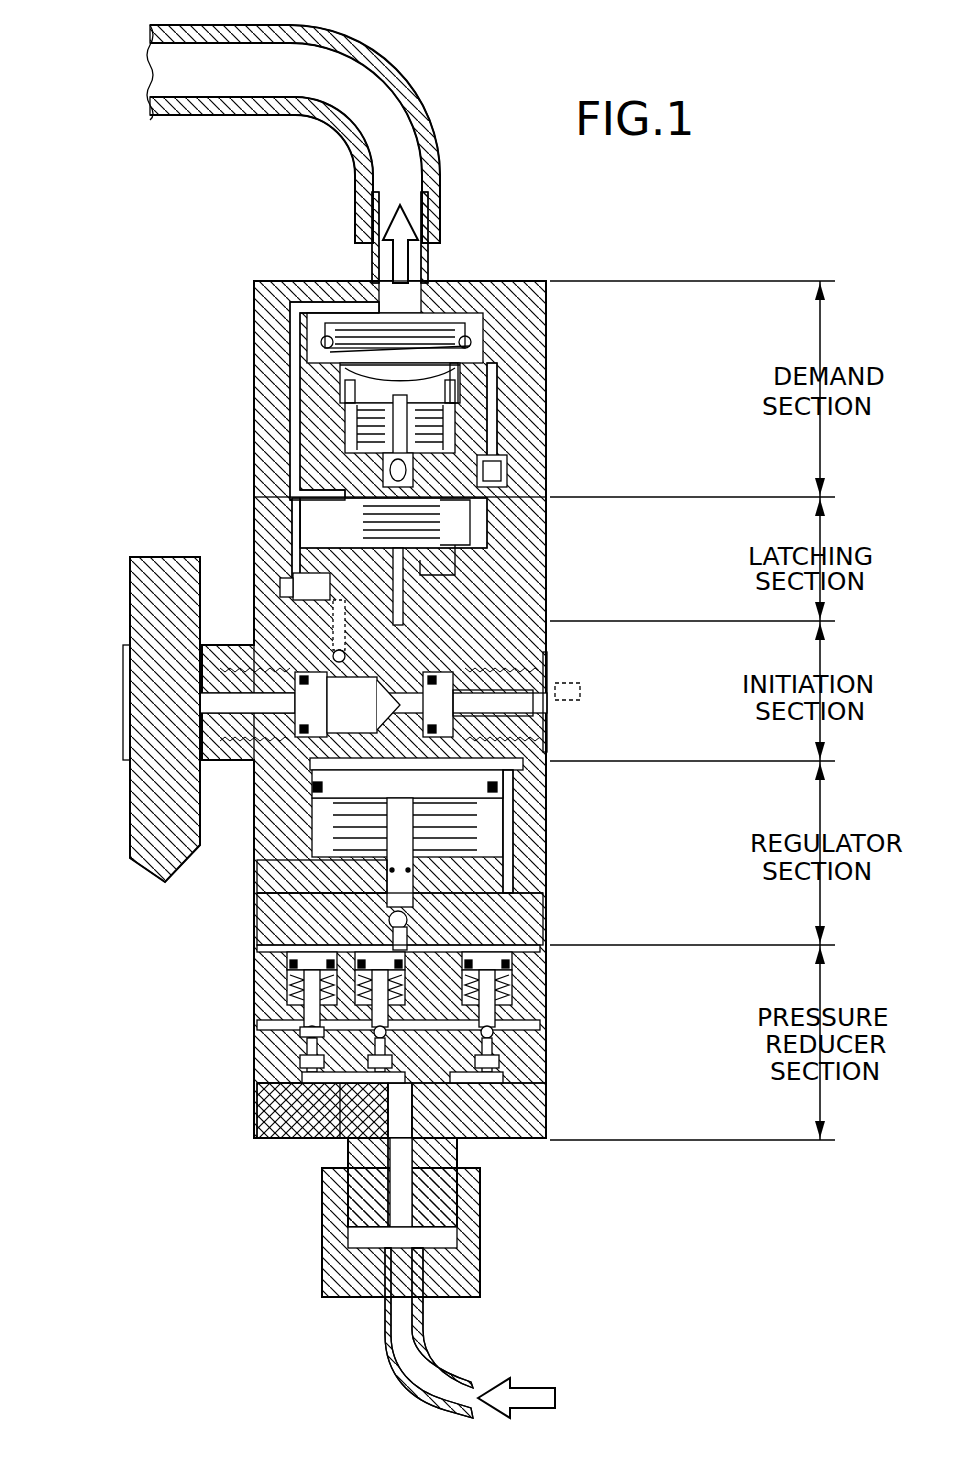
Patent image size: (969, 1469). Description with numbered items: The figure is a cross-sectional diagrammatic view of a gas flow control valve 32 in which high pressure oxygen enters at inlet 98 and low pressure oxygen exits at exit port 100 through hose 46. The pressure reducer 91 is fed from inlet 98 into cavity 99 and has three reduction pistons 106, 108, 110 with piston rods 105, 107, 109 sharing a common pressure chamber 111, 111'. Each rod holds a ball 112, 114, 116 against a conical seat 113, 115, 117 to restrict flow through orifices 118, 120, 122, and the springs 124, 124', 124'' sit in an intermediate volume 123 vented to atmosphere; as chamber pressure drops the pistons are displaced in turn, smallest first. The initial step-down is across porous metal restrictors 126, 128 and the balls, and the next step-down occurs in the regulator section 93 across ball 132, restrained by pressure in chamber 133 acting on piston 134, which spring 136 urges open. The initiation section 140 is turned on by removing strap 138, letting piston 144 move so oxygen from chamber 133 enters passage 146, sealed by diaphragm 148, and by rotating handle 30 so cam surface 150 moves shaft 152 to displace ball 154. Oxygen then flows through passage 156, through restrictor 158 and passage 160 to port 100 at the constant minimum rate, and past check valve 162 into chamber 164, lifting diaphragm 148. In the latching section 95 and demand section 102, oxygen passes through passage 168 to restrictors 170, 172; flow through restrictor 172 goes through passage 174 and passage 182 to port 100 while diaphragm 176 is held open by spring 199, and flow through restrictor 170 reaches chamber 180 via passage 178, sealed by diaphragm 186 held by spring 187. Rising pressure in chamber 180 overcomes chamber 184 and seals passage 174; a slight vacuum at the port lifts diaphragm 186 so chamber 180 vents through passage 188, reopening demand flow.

The breathing hose 46 is at (407, 82).
The exit port 100 is at (402, 190).
The spring 187 is at (432, 330).
The passage 188 is at (470, 340).
The diaphragm 186 is at (480, 355).
The spring 199 is at (500, 388).
The passage 178 is at (460, 420).
The flow restrictor 172 is at (470, 455).
The flow restrictor 170 is at (500, 470).
The chamber 180 is at (345, 372).
The diaphragm 176 is at (370, 380).
The passage 174 is at (345, 415).
The chamber 184 is at (345, 437).
The passage 160 is at (320, 447).
The passage 182 is at (300, 480).
The check valve 162 is at (300, 530).
The restrictor 158 is at (320, 575).
The passage 156 is at (288, 588).
The ball 154 is at (338, 620).
The shaft 152 is at (335, 655).
The diaphragm 148 is at (490, 516).
The passage 168 is at (470, 545).
The chamber 164 is at (470, 560).
The cam surface 150 is at (235, 770).
The passage 146 is at (520, 652).
The piston 144 is at (540, 672).
The restraint strap 138 is at (555, 680).
The chamber 133 is at (500, 745).
The piston 134 is at (500, 785).
The spring 136 is at (480, 818).
The ball 132 is at (460, 900).
The common pressure chamber 111' is at (566, 841).
The reduction piston 110 is at (535, 930).
The reduction piston 108 is at (385, 925).
The reduction piston 106 is at (380, 960).
The intermediate volume 123 is at (290, 966).
The spring restraint washers 124 is at (247, 998).
The spring restraint washers 124' is at (291, 989).
The spring restraint washers 124'' is at (561, 988).
The conical seat 113 is at (310, 1040).
The piston rod 105 is at (300, 1028).
The ball 112 is at (305, 1055).
The porous metal restrictor 126 is at (330, 1075).
The orifice 118 is at (330, 1085).
The piston rod 107 is at (330, 1100).
The conical seat 115 is at (345, 1120).
The ball 114 is at (370, 1100).
The porous metal restrictor 128 is at (395, 1150).
The orifice 120 is at (365, 1150).
The piston rod 109 is at (503, 1025).
The conical seat 117 is at (505, 1050).
The ball 116 is at (505, 1062).
The orifice 122 is at (490, 1090).
The common pressure chamber 111 is at (525, 1110).
The cavity 99 is at (470, 1148).
The control valve 32 is at (493, 1202).
The inlet 98 is at (420, 1235).
The initiation valve handle 30 is at (128, 852).
The demand section 102 is at (880, 405).
The latching section 95 is at (875, 585).
The initiation section 140 is at (873, 712).
The regulator section 93 is at (875, 875).
The pressure reducer 91 is at (878, 1075).